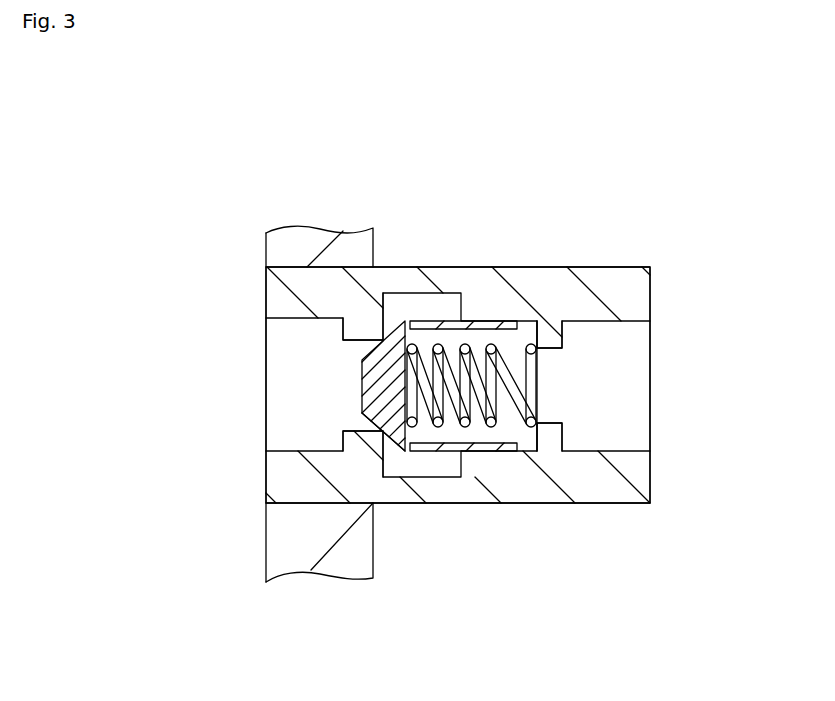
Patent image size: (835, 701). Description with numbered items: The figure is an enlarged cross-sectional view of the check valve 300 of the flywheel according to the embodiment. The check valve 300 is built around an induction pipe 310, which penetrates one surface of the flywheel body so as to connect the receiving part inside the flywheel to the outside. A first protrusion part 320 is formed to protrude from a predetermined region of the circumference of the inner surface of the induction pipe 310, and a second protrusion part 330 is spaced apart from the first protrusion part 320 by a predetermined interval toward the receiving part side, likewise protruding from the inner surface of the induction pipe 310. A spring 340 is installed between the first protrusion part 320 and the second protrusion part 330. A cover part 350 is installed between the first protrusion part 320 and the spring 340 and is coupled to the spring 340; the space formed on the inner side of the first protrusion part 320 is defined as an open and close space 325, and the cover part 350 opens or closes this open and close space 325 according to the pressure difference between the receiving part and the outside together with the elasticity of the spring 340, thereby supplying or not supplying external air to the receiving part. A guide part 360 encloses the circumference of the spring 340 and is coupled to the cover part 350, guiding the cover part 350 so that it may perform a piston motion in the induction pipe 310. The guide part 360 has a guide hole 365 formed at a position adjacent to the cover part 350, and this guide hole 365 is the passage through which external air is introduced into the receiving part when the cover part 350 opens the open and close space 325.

The check valve 300 is at (423, 178).
The induction pipe 310 is at (550, 287).
The first protrusion part 320 is at (353, 327).
The open and close space 325 is at (353, 430).
The second protrusion part 330 is at (550, 335).
The spring 340 is at (530, 427).
The cover part 350 is at (388, 428).
The guide part 360 is at (476, 448).
The guide hole 365 is at (418, 451).